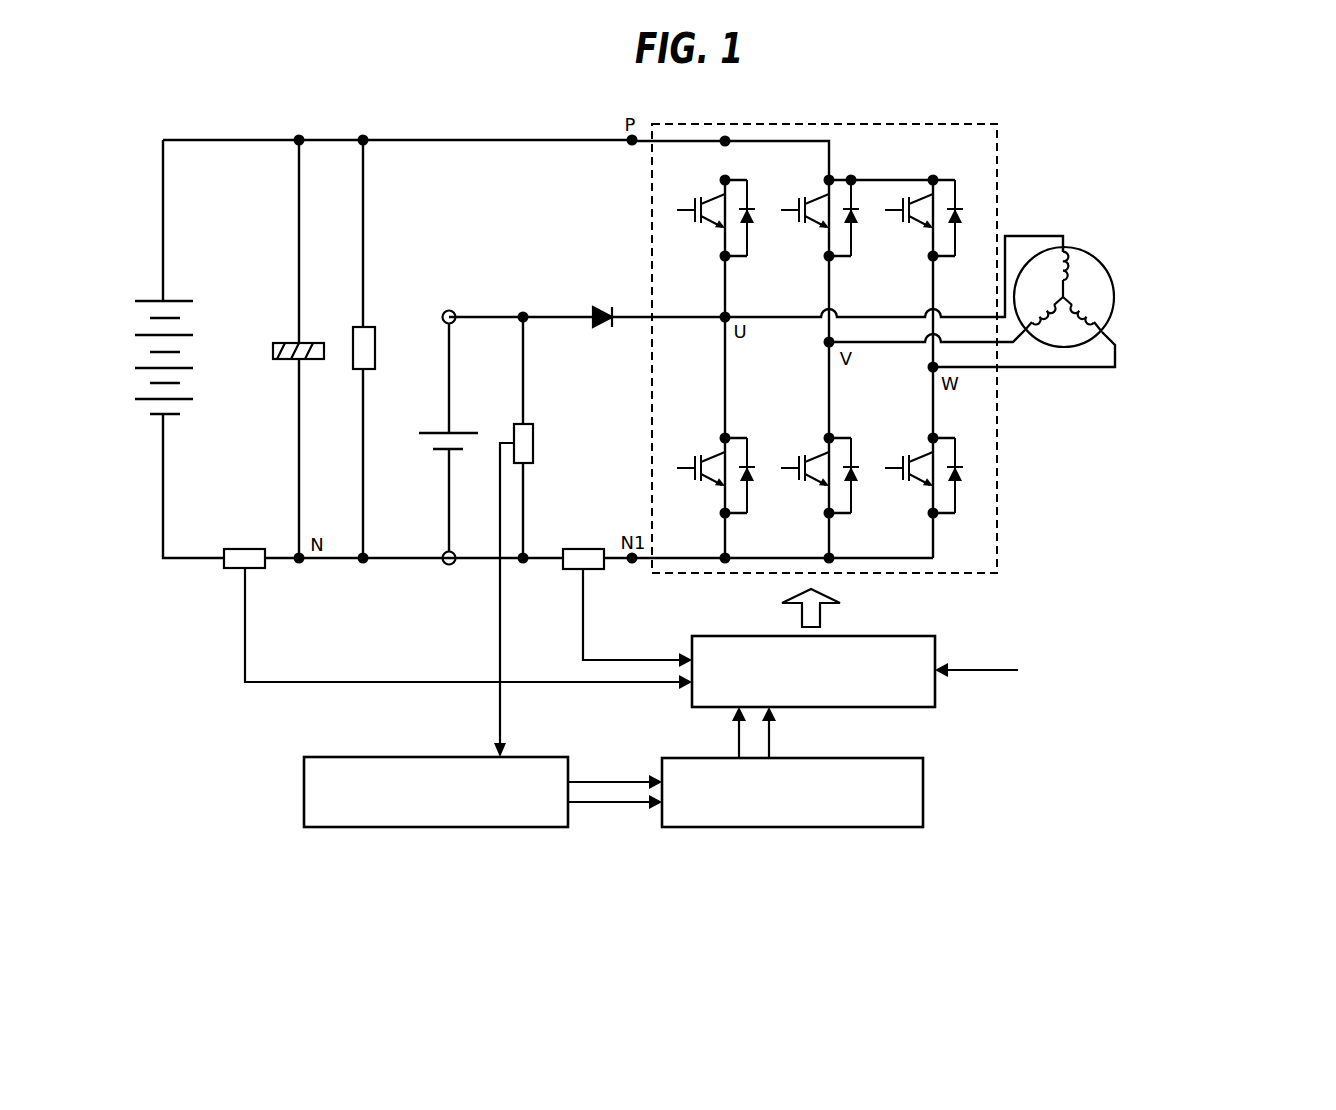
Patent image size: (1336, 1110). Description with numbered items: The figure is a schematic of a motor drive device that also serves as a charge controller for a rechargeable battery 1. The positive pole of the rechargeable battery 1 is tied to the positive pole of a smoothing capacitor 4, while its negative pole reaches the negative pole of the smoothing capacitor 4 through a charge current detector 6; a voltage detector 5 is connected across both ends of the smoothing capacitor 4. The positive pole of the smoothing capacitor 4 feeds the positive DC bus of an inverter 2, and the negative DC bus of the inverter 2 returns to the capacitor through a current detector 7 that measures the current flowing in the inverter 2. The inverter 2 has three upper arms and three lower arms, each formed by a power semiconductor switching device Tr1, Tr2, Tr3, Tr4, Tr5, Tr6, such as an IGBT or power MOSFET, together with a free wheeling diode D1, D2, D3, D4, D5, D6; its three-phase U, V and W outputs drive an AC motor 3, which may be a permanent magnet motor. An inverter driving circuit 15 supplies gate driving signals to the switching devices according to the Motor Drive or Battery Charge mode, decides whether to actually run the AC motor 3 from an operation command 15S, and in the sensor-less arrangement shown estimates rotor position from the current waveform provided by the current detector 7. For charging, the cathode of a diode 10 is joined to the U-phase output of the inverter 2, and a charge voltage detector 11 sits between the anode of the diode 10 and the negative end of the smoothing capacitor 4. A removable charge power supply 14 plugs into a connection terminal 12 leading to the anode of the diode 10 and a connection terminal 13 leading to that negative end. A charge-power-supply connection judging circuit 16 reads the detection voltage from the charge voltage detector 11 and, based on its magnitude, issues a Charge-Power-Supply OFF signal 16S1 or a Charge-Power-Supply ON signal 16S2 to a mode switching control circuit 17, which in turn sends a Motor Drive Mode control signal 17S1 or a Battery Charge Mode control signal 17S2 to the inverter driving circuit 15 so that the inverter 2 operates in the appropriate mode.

The rechargeable battery 1 is at (185, 302).
The inverter 2 is at (842, 124).
The AC motor 3 is at (1078, 247).
The smoothing capacitor 4 is at (311, 343).
The voltage detector 5 is at (373, 327).
The charge current detector 6 is at (242, 548).
The current detector 7 is at (582, 548).
The diode 10 is at (595, 308).
The charge voltage detector 11 is at (533, 440).
The connection terminal 12 is at (454, 311).
The connection terminal 13 is at (443, 565).
The charge power supply 14 is at (458, 455).
The inverter driving circuit 15 is at (885, 636).
The operation command 15S is at (983, 670).
The charge-power-supply connection judging circuit 16 is at (348, 757).
The Charge-Power-Supply OFF signal 16S1 is at (613, 805).
The Charge-Power-Supply ON signal 16S2 is at (610, 780).
The mode switching control circuit 17 is at (925, 798).
The Motor Drive Mode control signal 17S1 is at (739, 740).
The Battery Charge Mode control signal 17S2 is at (769, 745).
The power semiconductor switching device Tr1 is at (718, 198).
The power semiconductor switching device Tr2 is at (718, 456).
The power semiconductor switching device Tr3 is at (822, 198).
The power semiconductor switching device Tr4 is at (822, 456).
The power semiconductor switching device Tr5 is at (926, 198).
The power semiconductor switching device Tr6 is at (926, 456).
The free wheeling diode D1 is at (752, 230).
The free wheeling diode D2 is at (752, 488).
The free wheeling diode D3 is at (856, 230).
The free wheeling diode D4 is at (856, 488).
The free wheeling diode D5 is at (960, 230).
The free wheeling diode D6 is at (960, 488).